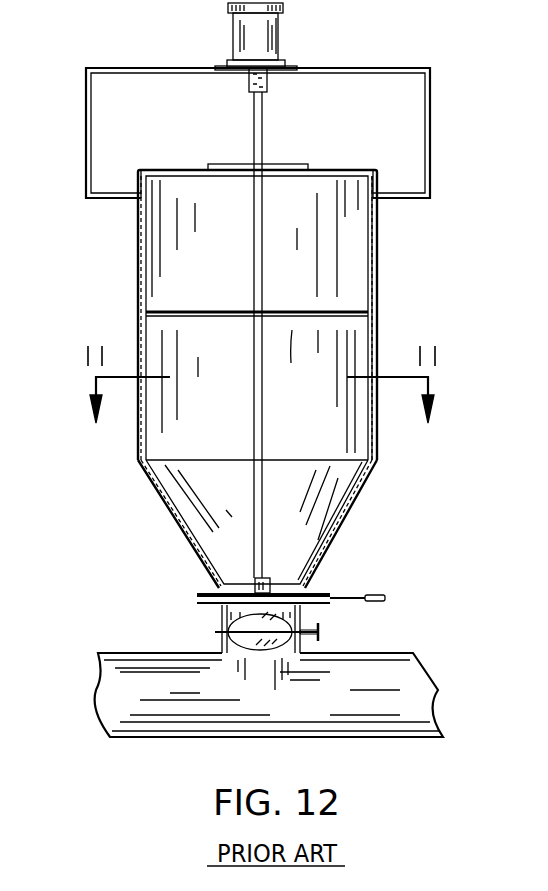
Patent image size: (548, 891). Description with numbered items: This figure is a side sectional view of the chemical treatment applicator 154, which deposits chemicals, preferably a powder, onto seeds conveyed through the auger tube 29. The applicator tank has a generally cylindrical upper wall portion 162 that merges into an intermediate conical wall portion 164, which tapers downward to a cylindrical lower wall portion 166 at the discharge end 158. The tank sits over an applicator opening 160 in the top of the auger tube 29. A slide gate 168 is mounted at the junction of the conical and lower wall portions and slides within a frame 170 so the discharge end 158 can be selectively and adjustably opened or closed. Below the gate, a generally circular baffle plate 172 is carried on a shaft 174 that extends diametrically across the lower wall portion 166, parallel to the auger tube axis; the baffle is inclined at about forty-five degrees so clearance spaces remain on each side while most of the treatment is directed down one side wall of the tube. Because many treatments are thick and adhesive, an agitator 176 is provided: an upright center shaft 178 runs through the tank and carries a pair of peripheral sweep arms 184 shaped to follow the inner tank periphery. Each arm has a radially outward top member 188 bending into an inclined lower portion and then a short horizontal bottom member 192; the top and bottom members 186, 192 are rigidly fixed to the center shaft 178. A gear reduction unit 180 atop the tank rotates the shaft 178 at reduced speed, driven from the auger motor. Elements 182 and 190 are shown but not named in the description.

The auger tube 29 is at (143, 738).
The chemical treatment applicator 154 is at (458, 232).
The discharge end 158 is at (228, 612).
The applicator opening 160 is at (287, 656).
The cylindrical upper wall portion 162 is at (136, 275).
The intermediate conical wall portion 164 is at (357, 503).
The cylindrical lower wall portion 166 is at (300, 617).
The slide gate 168 is at (350, 595).
The frame 170 is at (320, 592).
The baffle plate 172 is at (253, 646).
The shaft 174 is at (302, 644).
The agitator 176 is at (243, 305).
The center shaft 178 is at (256, 219).
The gear reduction unit 180 is at (281, 37).
The housing 182 is at (430, 104).
The peripheral sweep arms 184 is at (330, 309).
The top member 186 is at (258, 391).
The radially outwardly directed top member 188 is at (369, 335).
The cone insulation 190 is at (355, 478).
The horizontal bottom member 192 is at (280, 582).